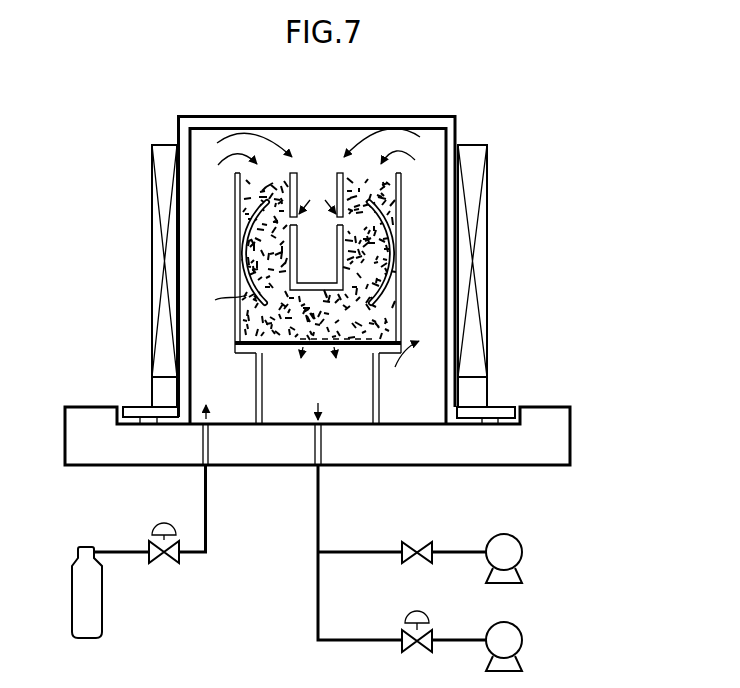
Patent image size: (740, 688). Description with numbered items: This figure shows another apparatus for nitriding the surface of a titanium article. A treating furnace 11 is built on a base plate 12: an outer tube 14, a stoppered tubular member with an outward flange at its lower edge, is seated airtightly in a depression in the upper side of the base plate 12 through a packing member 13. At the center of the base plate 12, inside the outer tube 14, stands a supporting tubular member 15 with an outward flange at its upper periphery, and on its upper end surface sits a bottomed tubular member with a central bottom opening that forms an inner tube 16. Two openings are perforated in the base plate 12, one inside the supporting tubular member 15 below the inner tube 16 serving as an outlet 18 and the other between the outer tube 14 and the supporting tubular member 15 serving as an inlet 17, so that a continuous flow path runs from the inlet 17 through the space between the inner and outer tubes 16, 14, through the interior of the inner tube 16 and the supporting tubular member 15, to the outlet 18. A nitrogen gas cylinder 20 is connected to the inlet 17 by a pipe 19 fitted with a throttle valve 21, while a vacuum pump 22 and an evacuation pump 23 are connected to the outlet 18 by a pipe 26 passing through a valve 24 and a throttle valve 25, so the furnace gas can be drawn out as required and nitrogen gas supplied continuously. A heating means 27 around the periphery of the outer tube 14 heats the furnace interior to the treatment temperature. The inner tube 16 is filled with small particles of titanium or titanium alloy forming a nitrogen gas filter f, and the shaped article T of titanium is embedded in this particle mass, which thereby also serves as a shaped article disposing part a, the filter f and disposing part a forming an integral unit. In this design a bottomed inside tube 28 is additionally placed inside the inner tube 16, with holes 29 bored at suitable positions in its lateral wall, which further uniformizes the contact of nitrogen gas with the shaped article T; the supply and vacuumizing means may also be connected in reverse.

The treating furnace 11 is at (363, 114).
The base plate 12 is at (543, 413).
The packing member 13 is at (144, 417).
The outer tube 14 is at (237, 125).
The supporting tubular member 15 is at (379, 378).
The inner tube 16 is at (400, 270).
The inlet 17 is at (210, 420).
The outlet 18 is at (315, 423).
The pipe 19 is at (208, 502).
The nitrogen gas cylinder 20 is at (92, 602).
The throttle valve 21 is at (170, 563).
The vacuum pump 22 is at (508, 545).
The evacuation pump 23 is at (508, 633).
The valve 24 is at (432, 543).
The throttle valve 25 is at (432, 633).
The pipe 26 is at (320, 503).
The heating means 27 is at (152, 248).
The inside tube 28 is at (340, 190).
The holes 29 is at (337, 261).
The shaped article of titanium T is at (248, 245).
The shaped article disposing part a is at (223, 302).
The nitrogen gas filter f is at (393, 200).